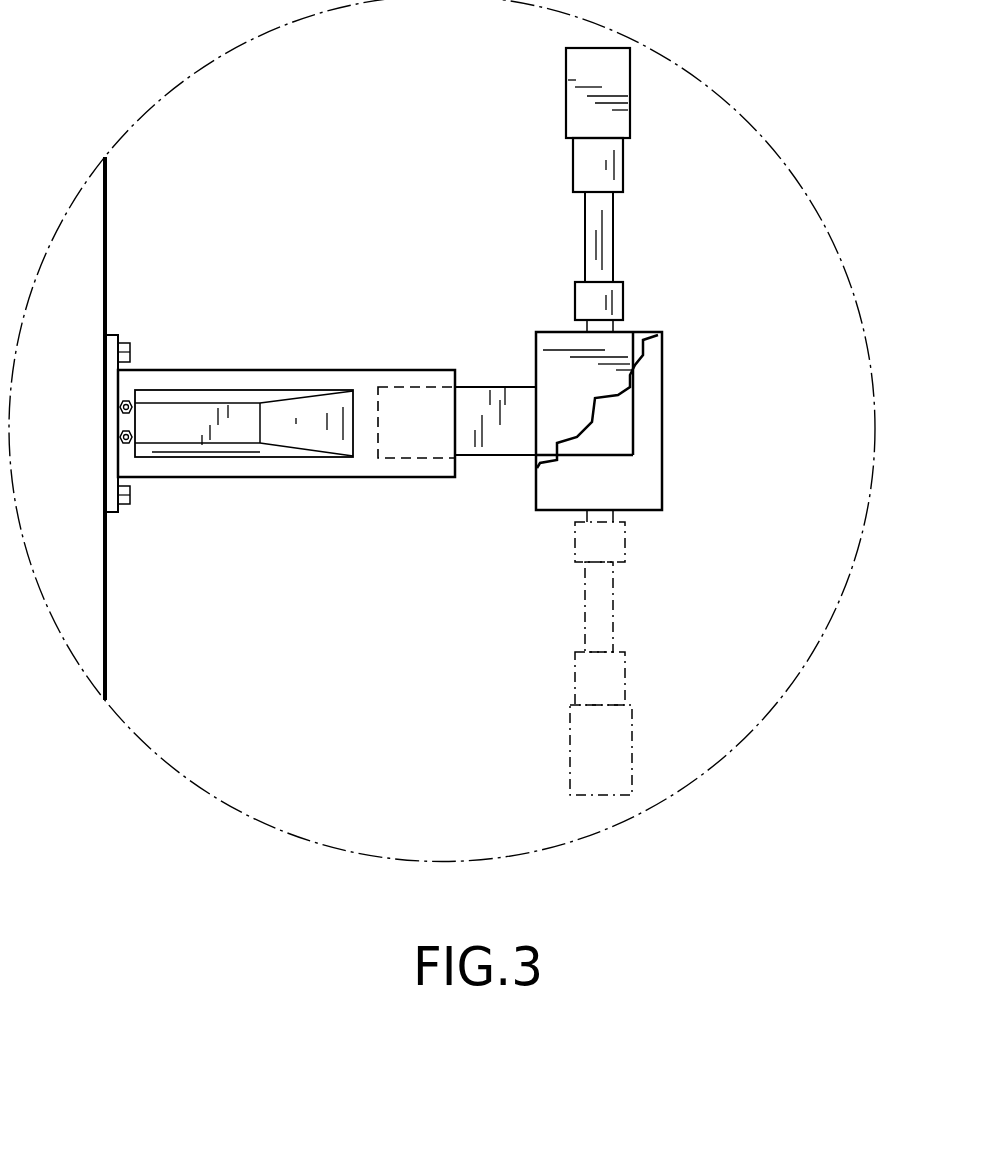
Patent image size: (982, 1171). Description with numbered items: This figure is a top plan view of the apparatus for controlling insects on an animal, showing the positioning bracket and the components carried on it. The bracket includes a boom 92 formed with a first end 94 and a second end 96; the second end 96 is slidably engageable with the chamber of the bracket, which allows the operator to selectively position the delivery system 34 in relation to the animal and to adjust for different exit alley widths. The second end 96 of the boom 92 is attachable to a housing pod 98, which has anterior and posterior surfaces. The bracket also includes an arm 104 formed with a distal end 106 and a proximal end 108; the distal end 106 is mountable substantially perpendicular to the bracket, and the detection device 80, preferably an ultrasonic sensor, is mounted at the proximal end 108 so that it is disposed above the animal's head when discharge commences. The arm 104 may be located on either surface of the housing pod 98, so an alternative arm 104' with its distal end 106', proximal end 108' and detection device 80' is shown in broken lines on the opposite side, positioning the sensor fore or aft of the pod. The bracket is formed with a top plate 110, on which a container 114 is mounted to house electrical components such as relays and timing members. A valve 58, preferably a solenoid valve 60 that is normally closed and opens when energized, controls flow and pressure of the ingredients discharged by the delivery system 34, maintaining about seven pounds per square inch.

The delivery system 34 is at (768, 137).
The valve 58 is at (641, 425).
The solenoid valve 60 is at (620, 458).
The detection device 80 is at (547, 93).
The lock nut 80' is at (554, 750).
The boom 92 is at (478, 387).
The first end 94 is at (540, 422).
The second end 96 is at (378, 412).
The housing pod 98 is at (662, 510).
The arm 104 is at (662, 237).
The threaded rod 104' is at (657, 607).
The distal end 106 is at (553, 303).
The washer 106' is at (561, 559).
The proximal end 108 is at (540, 175).
The nut 108' is at (552, 669).
The top plate 110 is at (258, 462).
The container 114 is at (170, 412).